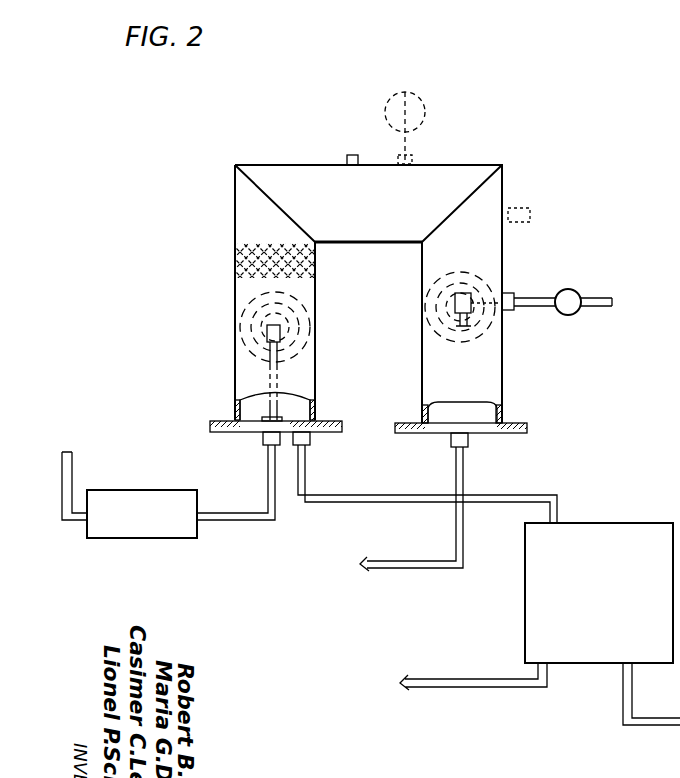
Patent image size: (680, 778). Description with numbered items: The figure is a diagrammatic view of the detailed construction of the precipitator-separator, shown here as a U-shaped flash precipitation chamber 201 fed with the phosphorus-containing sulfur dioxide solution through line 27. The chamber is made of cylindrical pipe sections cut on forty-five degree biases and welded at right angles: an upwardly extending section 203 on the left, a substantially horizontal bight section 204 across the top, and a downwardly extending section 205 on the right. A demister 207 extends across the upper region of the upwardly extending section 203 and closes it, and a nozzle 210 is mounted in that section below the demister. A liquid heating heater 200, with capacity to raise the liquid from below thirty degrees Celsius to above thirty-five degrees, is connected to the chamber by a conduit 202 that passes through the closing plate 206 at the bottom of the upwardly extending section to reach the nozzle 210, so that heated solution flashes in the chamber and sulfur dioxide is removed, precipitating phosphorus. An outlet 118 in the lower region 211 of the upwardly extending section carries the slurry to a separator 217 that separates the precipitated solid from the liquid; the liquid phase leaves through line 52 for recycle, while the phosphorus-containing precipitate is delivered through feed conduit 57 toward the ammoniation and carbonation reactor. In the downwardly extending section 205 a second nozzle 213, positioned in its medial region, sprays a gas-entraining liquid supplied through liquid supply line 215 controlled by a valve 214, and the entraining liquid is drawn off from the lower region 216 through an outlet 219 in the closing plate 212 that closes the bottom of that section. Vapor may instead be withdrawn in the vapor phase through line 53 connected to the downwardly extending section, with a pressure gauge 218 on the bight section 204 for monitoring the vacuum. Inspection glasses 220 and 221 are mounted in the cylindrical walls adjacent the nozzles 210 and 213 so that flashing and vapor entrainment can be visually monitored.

The chamber housing 201 is at (221, 203).
The top wall of housing 204 is at (316, 178).
The sensor 218 is at (403, 113).
The line 53 is at (522, 206).
The side wall 205 is at (490, 254).
The filter 207 is at (330, 261).
The first field region 220 is at (240, 320).
The first electrode 210 is at (281, 331).
The first chamber 203 is at (299, 381).
The first dome 211 is at (299, 409).
The first base plate 206 is at (212, 425).
The second field region 221 is at (443, 286).
The second electrode 213 is at (470, 324).
The conduit 215 is at (541, 301).
The valve 214 is at (586, 300).
The second dome 216 is at (449, 419).
The second base plate 212 is at (519, 427).
The line 27 is at (67, 470).
The pump 200 is at (133, 502).
The supply line 202 is at (225, 516).
The transfer line 118 is at (304, 478).
The outlet line 219 is at (419, 563).
The control unit 217 is at (612, 604).
The line 52 is at (441, 680).
The feed conduit 57 is at (655, 722).